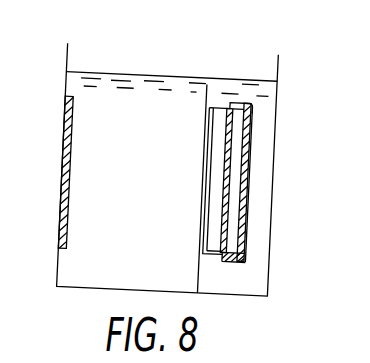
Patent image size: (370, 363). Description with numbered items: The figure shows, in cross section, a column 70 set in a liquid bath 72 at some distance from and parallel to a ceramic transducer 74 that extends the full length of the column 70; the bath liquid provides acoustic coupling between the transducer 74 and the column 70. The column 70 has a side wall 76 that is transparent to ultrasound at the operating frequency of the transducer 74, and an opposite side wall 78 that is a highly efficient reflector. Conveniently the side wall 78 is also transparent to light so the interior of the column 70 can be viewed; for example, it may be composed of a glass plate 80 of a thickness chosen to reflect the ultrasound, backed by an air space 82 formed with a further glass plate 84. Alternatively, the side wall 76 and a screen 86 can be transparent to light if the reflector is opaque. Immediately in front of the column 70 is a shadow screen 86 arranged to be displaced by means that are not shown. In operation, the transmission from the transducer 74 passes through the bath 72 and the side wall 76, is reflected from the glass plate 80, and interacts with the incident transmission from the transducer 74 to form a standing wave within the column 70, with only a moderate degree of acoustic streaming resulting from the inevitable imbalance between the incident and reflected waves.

The column 70 is at (220, 116).
The liquid bath 72 is at (274, 256).
The ceramic transducer 74 is at (62, 205).
The side wall 76 is at (211, 160).
The opposite side wall 78 is at (242, 97).
The glass plate 80 is at (225, 200).
The air space 82 is at (248, 200).
The further glass plate 84 is at (249, 164).
The shadow screen 86 is at (205, 118).